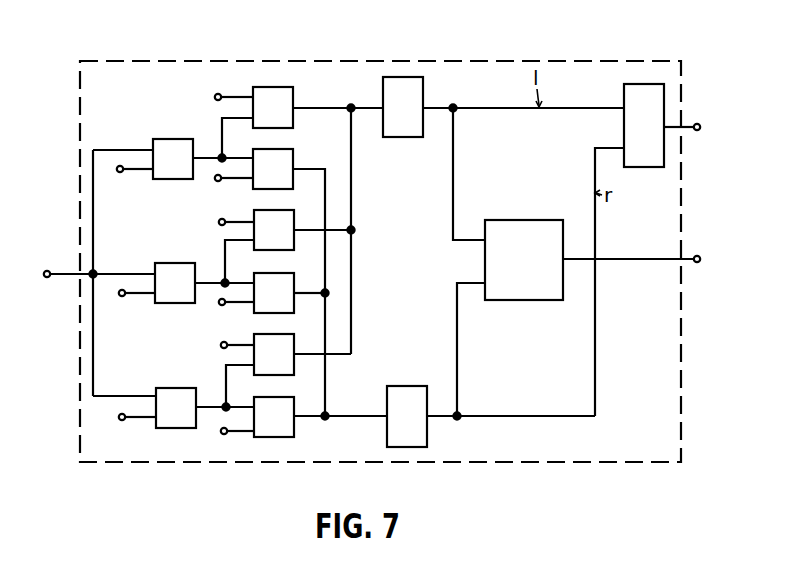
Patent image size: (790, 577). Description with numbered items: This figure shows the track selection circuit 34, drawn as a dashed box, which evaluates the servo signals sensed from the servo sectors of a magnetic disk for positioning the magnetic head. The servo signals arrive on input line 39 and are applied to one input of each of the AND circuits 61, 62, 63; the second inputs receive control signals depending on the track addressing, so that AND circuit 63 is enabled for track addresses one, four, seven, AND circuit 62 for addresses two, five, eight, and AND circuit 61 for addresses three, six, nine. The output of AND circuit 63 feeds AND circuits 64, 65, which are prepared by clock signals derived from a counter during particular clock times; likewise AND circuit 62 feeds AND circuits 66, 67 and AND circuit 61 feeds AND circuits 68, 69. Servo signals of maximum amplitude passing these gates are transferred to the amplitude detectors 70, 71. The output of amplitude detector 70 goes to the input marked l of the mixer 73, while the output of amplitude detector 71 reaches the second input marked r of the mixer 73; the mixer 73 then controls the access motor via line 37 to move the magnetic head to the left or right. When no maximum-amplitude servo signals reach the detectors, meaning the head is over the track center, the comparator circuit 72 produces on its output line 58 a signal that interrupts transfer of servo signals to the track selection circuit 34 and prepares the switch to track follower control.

The track selection circuit 34 is at (648, 444).
The input line 39 is at (63, 271).
The AND circuit 61 is at (164, 388).
The AND circuit 62 is at (160, 263).
The AND circuit 63 is at (160, 139).
The AND circuit 64 is at (294, 93).
The AND circuit 65 is at (294, 154).
The AND circuit 66 is at (294, 213).
The AND circuit 67 is at (294, 282).
The AND circuit 68 is at (294, 343).
The AND circuit 69 is at (296, 404).
The amplitude detector 70 is at (425, 89).
The amplitude detector 71 is at (407, 386).
The comparator circuit 72 is at (512, 221).
The mixer 73 is at (624, 96).
The output line 37 is at (686, 122).
The output line 58 is at (636, 262).